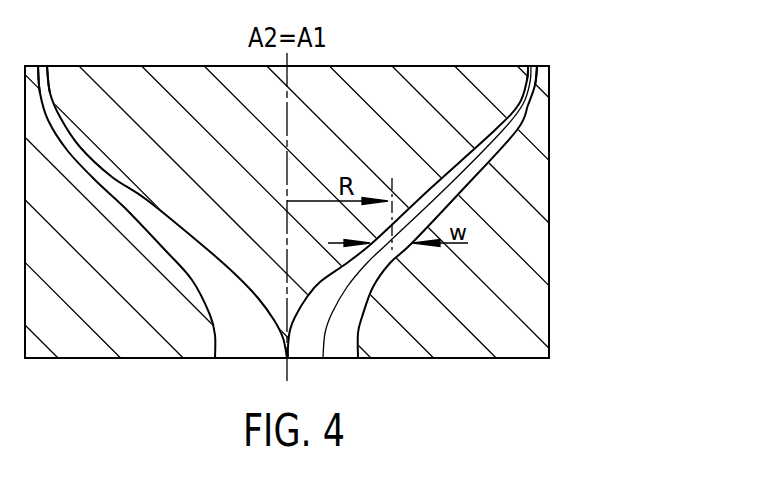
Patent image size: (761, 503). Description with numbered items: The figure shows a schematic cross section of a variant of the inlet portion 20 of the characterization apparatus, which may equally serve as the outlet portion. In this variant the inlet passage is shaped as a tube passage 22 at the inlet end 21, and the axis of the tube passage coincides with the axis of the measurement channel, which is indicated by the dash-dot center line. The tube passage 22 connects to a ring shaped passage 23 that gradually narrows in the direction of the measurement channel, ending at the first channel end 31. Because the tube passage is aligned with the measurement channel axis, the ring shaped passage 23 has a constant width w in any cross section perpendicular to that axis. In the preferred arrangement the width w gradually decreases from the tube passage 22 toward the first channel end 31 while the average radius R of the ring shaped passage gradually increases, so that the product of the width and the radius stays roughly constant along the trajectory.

The inlet portion 20 is at (550, 313).
The inlet end 21 is at (338, 345).
The tube passage 22 is at (239, 339).
The ring shaped passage 23 is at (470, 185).
The first channel end 31 is at (43, 66).